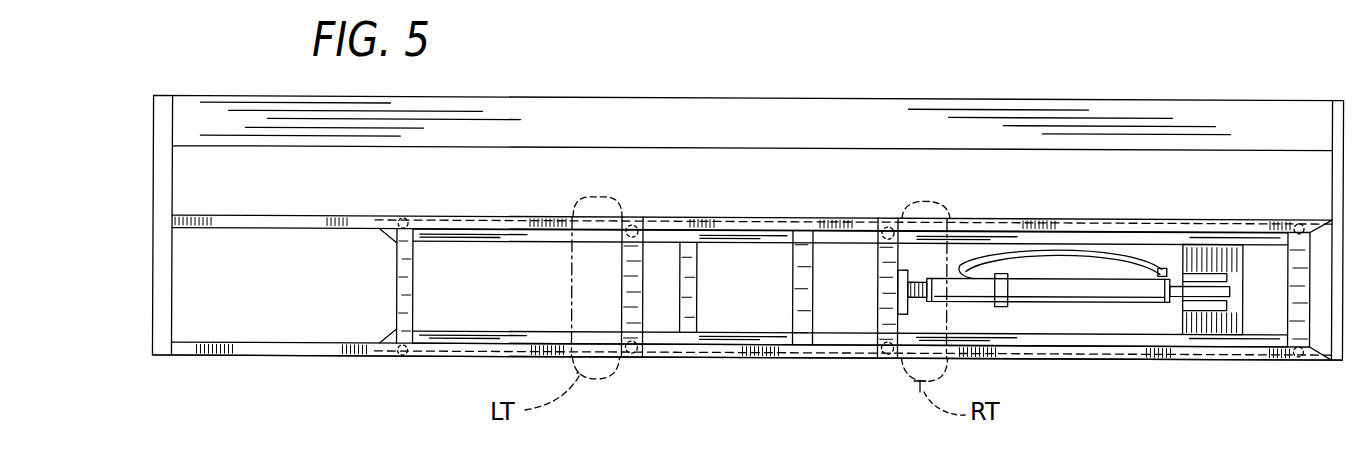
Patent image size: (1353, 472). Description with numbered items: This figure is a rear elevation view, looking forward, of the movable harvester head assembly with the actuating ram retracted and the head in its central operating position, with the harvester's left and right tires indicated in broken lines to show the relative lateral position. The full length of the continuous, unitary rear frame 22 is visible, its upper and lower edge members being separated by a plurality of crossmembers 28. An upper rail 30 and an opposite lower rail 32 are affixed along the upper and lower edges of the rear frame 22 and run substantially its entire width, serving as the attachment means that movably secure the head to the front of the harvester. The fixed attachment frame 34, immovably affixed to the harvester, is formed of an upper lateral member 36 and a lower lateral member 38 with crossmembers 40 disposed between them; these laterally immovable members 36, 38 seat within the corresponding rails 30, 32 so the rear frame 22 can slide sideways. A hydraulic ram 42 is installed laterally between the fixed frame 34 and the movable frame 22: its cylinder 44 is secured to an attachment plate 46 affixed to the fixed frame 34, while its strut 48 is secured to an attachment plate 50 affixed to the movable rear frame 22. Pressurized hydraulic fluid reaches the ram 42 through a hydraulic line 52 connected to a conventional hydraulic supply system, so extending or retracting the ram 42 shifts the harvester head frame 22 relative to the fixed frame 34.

The rear frame 22 is at (166, 357).
The crossmembers 28 is at (792, 284).
The upper rail 30 is at (305, 228).
The lower rail 32 is at (258, 341).
The frame 34 is at (393, 330).
The upper lateral member 36 is at (497, 240).
The lower lateral member 38 is at (485, 328).
The crossmembers 40 is at (620, 250).
The hydraulic ram 42 is at (1157, 303).
The cylinder 44 is at (1072, 302).
The attachment plate 46 is at (910, 268).
The strut 48 is at (1170, 277).
The attachment plate 50 is at (1213, 252).
The hydraulic line 52 is at (1087, 256).